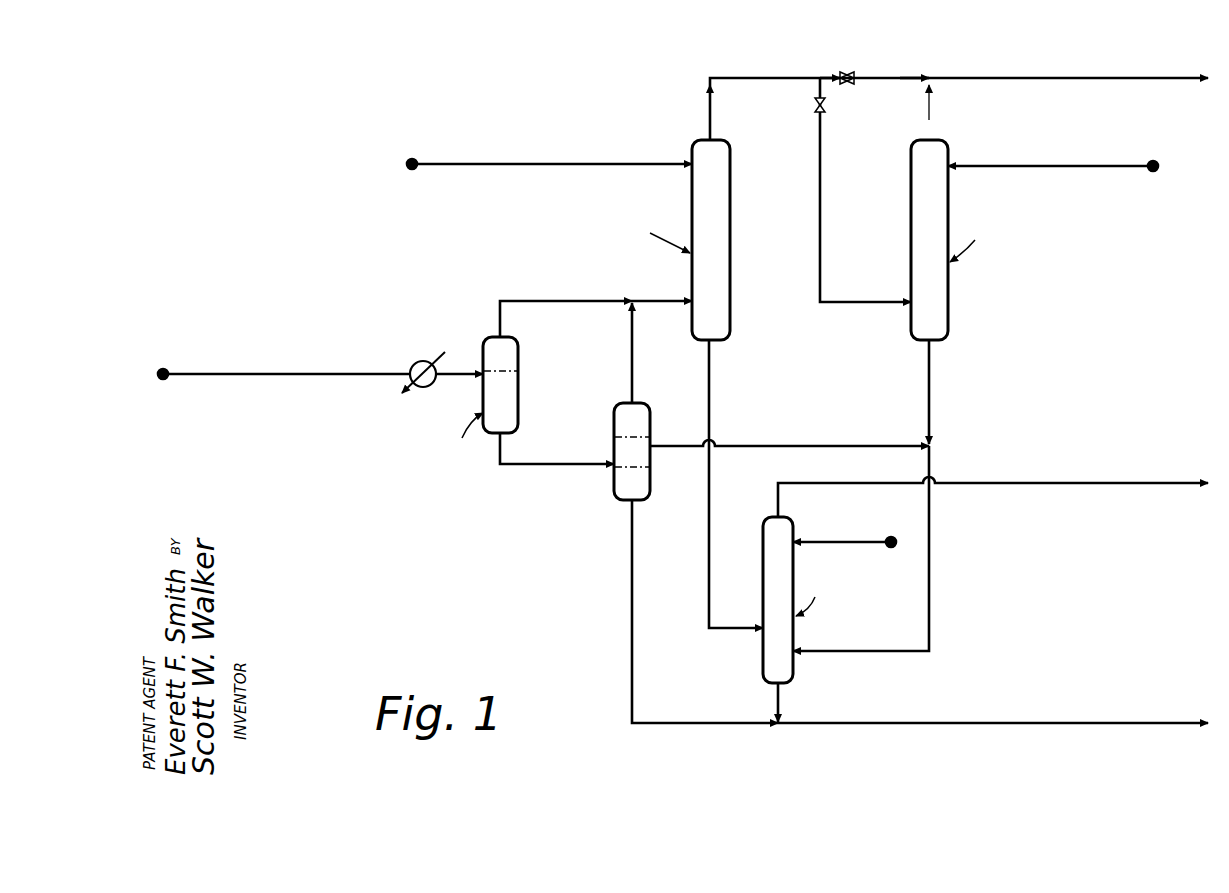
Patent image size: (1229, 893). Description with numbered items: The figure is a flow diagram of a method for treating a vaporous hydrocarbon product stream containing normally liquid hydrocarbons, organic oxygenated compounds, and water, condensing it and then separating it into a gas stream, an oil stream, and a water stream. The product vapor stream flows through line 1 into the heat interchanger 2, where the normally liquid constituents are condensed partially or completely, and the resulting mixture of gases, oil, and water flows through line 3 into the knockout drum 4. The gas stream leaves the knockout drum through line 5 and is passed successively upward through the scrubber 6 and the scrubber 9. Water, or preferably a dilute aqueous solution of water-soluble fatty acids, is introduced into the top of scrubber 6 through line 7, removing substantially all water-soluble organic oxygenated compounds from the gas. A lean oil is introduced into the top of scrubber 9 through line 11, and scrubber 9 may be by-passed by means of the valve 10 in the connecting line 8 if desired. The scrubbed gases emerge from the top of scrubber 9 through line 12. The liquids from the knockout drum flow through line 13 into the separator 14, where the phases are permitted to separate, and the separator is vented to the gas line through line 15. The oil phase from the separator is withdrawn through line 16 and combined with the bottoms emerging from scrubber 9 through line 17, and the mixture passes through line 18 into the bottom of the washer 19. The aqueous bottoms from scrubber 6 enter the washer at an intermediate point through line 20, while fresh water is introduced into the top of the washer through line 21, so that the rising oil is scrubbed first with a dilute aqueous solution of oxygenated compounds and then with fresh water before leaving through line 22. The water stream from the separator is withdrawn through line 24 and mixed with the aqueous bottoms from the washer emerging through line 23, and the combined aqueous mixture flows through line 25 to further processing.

The line 1 is at (270, 378).
The heat interchanger 2 is at (423, 387).
The line 3 is at (459, 373).
The knockout drum 4 is at (490, 342).
The line 5 is at (587, 290).
The scrubber 6 is at (692, 196).
The line 7 is at (532, 168).
The scrubber overhead bypass line with valve 8 is at (820, 213).
The scrubber 9 is at (915, 193).
The valve 10 is at (852, 70).
The line 11 is at (1052, 168).
The line 12 is at (1108, 82).
The line 13 is at (545, 468).
The separator 14 is at (616, 410).
The line 15 is at (632, 364).
The line 16 is at (830, 446).
The line 17 is at (929, 385).
The line 18 is at (929, 575).
The washer 19 is at (766, 522).
The line 20 is at (709, 577).
The line 21 is at (848, 545).
The line 22 is at (1090, 487).
The line 23 is at (779, 703).
The line 24 is at (630, 636).
The line 25 is at (1060, 727).